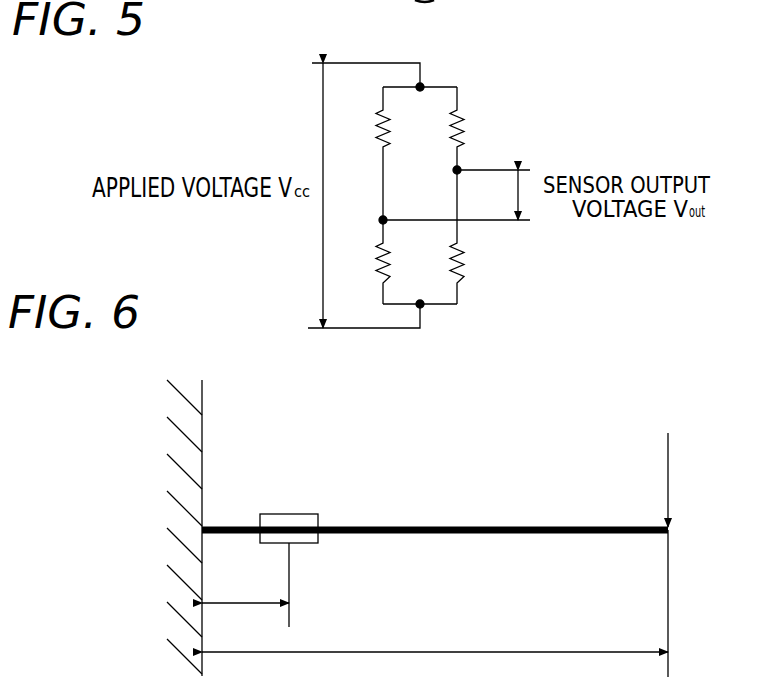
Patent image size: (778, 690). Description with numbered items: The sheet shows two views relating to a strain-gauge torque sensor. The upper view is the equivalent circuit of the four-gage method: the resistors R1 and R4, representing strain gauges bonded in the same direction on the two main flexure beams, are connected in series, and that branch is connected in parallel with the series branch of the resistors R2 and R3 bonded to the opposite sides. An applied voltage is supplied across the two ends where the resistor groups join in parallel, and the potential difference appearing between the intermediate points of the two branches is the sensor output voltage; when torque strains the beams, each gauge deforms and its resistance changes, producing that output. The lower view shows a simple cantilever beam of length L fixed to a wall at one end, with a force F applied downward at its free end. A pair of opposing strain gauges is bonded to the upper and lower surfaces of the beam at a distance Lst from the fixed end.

In FIG. 5, the electric resistance value of strain gauge R1 is at (477, 128).
In FIG. 5, the electric resistance value of strain gauge R2 is at (365, 153).
In FIG. 5, the electric resistance value of strain gauge R3 is at (364, 262).
In FIG. 5, the electric resistance value of strain gauge R4 is at (479, 237).
In FIG. 6, the force F is at (666, 468).
In FIG. 6, the length of cantilever beam L is at (435, 636).
In FIG. 6, the distance from fixed end Lst is at (245, 585).